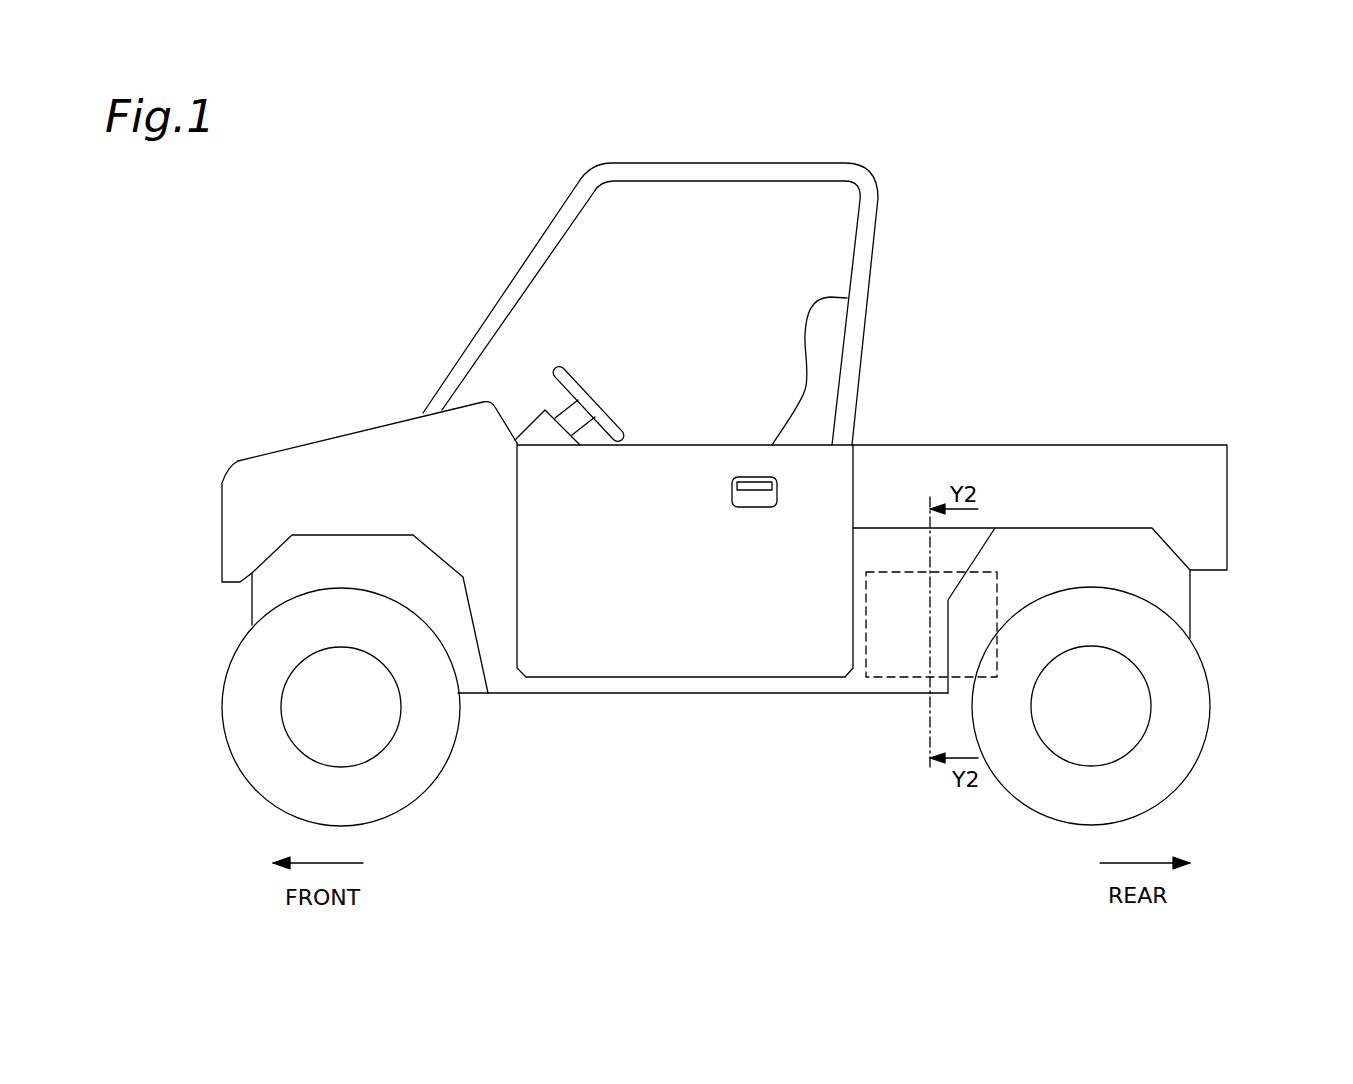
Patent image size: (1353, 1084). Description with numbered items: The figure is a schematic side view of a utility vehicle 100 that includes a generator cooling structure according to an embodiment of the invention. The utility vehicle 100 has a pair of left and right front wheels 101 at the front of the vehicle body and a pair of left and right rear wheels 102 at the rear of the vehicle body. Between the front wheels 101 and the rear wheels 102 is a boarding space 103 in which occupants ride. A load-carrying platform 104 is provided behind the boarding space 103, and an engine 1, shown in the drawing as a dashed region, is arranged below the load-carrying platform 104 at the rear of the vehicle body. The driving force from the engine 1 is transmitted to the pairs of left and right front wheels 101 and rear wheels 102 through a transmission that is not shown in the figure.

The utility vehicle 100 is at (457, 242).
The front wheels 101 is at (435, 783).
The rear wheels 102 is at (1185, 780).
The boarding space 103 is at (737, 378).
The load-carrying platform 104 is at (1013, 445).
The engine 1 is at (998, 585).